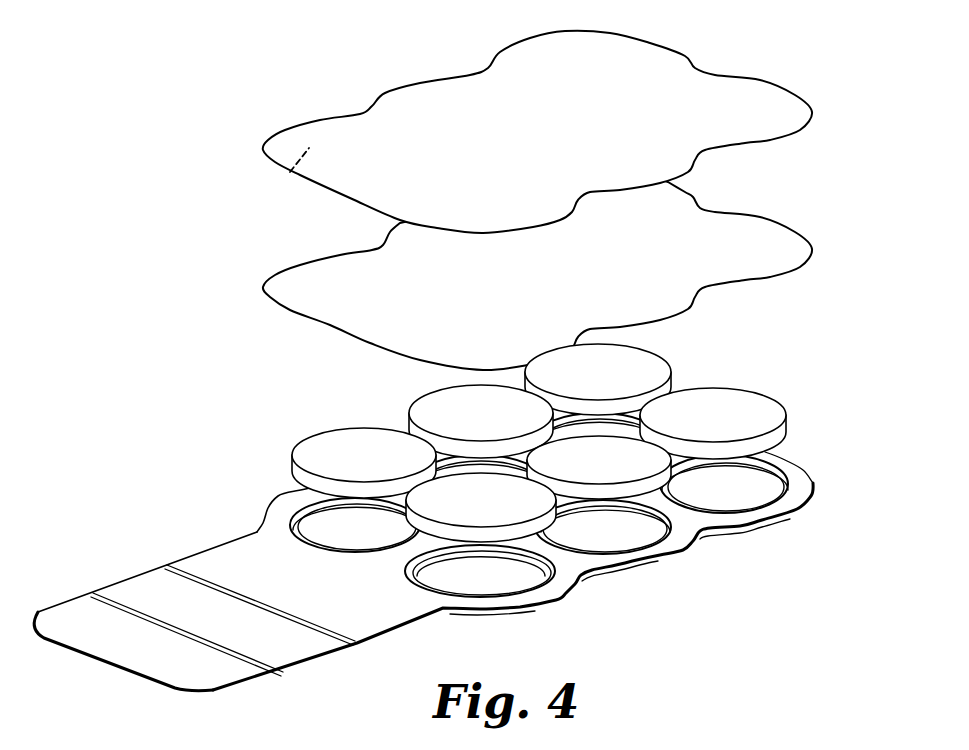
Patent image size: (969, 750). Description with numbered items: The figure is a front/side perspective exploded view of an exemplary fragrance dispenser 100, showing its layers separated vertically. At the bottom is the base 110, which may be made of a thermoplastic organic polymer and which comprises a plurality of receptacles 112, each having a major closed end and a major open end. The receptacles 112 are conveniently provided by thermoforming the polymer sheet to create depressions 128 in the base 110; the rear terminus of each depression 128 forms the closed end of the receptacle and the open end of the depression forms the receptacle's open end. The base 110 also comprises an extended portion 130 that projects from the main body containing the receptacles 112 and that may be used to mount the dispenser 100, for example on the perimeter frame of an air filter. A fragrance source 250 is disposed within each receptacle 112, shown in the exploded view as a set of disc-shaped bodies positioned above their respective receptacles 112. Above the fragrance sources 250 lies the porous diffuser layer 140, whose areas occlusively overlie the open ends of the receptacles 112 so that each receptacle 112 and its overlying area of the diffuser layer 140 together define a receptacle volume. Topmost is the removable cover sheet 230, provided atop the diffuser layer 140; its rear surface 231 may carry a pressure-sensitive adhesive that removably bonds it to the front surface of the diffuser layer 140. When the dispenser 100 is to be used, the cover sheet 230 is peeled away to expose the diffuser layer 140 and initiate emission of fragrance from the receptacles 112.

The fragrance dispenser 100 is at (777, 199).
The base 110 is at (571, 582).
The receptacle 112 is at (722, 505).
The thermoformed depression 128 is at (735, 538).
The extended portion 130 is at (145, 593).
The porous diffuser layer 140 is at (290, 280).
The removable cover sheet 230 is at (758, 93).
The rear surface of cover sheet 231 is at (290, 173).
The fragrance source 250 is at (418, 415).